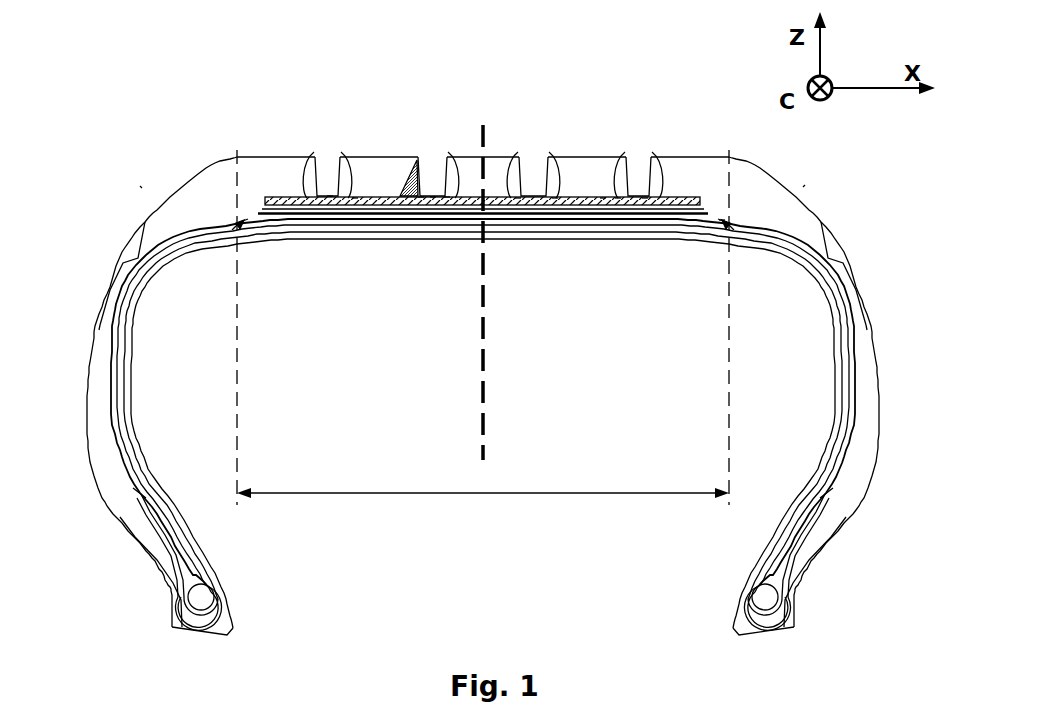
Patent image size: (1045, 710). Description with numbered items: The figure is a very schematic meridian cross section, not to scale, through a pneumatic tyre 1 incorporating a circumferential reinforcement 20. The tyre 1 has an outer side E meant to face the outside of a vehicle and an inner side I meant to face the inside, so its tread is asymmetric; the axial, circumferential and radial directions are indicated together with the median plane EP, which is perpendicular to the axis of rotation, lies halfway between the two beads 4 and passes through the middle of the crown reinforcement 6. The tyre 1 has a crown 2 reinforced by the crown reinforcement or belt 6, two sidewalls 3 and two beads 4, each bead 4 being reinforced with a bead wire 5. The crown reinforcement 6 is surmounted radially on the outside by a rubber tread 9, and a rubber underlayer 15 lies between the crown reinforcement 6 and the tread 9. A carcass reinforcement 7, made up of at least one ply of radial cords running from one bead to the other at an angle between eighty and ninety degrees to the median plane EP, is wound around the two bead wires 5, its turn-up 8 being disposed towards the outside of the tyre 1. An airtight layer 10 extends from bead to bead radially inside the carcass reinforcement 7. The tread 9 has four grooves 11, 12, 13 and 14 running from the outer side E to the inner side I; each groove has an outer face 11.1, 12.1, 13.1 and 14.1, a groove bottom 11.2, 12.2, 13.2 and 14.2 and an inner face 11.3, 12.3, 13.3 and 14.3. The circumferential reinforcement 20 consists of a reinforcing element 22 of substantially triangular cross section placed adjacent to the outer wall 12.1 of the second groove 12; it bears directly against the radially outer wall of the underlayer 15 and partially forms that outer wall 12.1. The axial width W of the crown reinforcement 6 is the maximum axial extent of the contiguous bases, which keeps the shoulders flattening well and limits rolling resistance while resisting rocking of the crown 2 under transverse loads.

The tyre 1 is at (300, 108).
The crown 2 is at (563, 112).
The sidewall 3 is at (97, 382).
The bead 4 is at (160, 548).
The bead wire 5 is at (205, 611).
The crown reinforcement 6 is at (570, 219).
The carcass reinforcement 7 is at (128, 295).
The turn-up 8 is at (163, 523).
The tread 9 is at (478, 155).
The airtight layer 10 is at (118, 376).
The first groove 11 is at (328, 162).
The second groove 12 is at (430, 162).
The third groove 13 is at (534, 162).
The fourth groove 14 is at (640, 162).
The underlayer 15 is at (700, 232).
The circumferential reinforcement 20 is at (395, 180).
The reinforcing element 22 is at (410, 178).
The outer face 11.1 is at (238, 223).
The groove bottom 11.2 is at (330, 200).
The inner face 11.3 is at (355, 200).
The outer face 12.1 is at (421, 198).
The groove bottom 12.2 is at (433, 198).
The inner face 12.3 is at (447, 198).
The outer face 13.1 is at (518, 198).
The groove bottom 13.2 is at (555, 198).
The inner face 13.3 is at (603, 198).
The outer face 14.1 is at (618, 198).
The groove bottom 14.2 is at (645, 198).
The inner face 14.3 is at (722, 222).
The outer side E is at (133, 176).
The inner side I is at (815, 170).
The median plane EP is at (503, 292).
The axial width of the crown reinforcement W is at (483, 327).